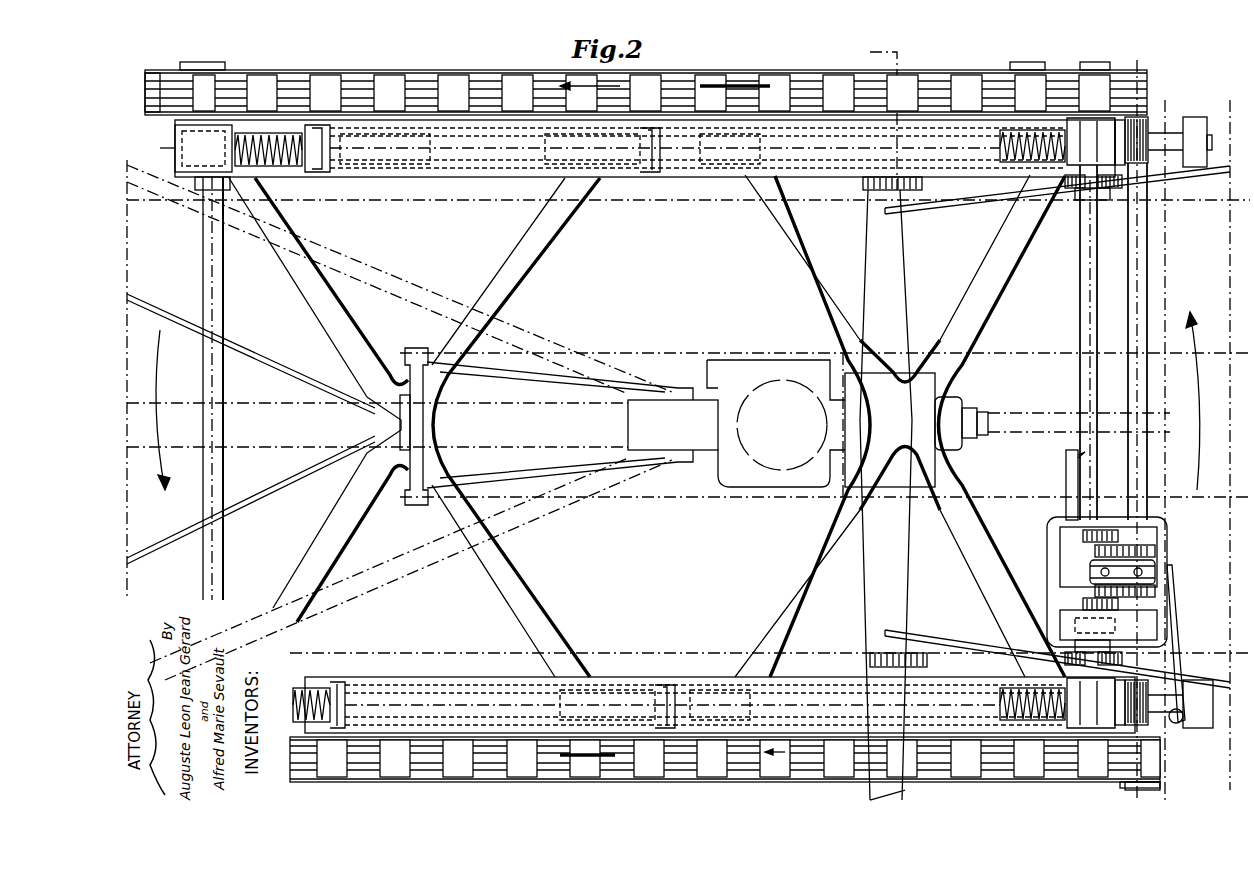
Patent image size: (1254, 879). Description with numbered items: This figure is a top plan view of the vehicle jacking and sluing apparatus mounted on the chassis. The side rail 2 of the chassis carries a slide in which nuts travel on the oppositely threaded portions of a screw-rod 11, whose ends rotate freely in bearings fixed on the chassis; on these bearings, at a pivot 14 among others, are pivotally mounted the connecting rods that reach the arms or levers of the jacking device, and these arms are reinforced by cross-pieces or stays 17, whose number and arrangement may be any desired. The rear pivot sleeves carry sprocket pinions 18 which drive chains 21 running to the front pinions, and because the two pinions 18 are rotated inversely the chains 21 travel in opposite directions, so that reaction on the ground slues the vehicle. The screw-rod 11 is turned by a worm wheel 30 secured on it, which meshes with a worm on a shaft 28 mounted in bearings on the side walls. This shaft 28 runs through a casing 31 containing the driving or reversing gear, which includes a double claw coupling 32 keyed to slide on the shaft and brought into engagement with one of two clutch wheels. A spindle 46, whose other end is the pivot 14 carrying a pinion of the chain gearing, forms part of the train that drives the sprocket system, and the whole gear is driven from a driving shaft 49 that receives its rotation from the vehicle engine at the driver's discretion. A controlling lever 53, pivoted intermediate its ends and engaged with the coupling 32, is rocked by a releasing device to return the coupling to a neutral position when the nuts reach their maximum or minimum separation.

The pivot 14 is at (1110, 802).
The sprocket pinion 18 is at (1030, 75).
The worm wheel 30 is at (1150, 128).
The side rail 2 is at (420, 675).
The screw-rod 11 is at (1020, 165).
The spindle 46 is at (1086, 255).
The driving shaft 49 is at (1066, 455).
The shaft 28 is at (1142, 456).
The casing 31 is at (1167, 520).
The double claw coupling 32 is at (1145, 572).
The controlling lever 53 is at (1178, 605).
The cross-piece 17 is at (800, 592).
The chain 21 is at (548, 778).